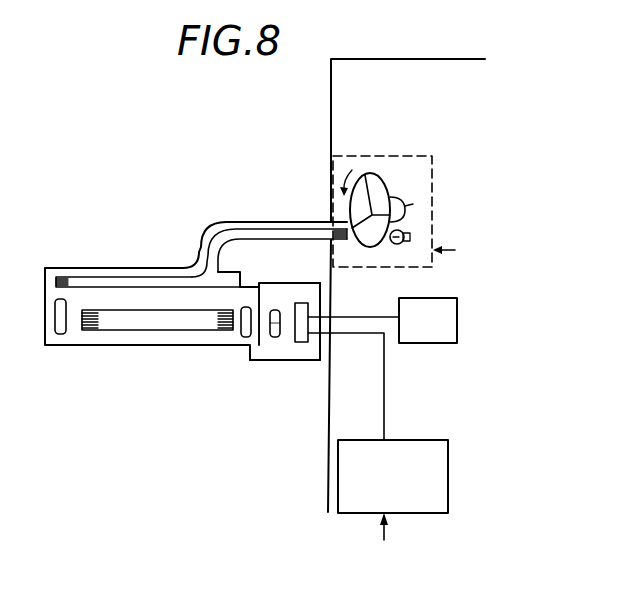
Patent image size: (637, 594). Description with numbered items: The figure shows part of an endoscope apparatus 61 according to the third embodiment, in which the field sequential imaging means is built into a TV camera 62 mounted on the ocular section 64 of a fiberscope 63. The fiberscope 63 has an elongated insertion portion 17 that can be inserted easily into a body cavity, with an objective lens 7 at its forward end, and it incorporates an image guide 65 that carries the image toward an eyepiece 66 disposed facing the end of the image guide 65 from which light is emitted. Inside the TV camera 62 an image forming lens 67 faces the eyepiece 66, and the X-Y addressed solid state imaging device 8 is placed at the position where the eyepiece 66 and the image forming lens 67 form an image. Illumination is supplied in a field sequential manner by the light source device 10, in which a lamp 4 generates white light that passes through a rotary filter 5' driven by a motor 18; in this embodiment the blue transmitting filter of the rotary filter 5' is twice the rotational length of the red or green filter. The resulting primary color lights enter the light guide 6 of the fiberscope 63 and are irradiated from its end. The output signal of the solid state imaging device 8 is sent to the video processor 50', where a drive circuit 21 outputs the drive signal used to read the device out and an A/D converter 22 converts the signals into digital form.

The video processor 50' is at (406, 263).
The light source device 10 is at (360, 156).
The rotary filter 5' is at (377, 182).
The motor 18 is at (402, 200).
The lamp 4 is at (391, 244).
The endoscope apparatus 61 is at (264, 138).
The light guide 6 is at (228, 221).
The fiberscope 63 is at (121, 257).
The insertion portion 17 is at (147, 268).
The objective lens 7 is at (59, 345).
The image guide 65 is at (122, 331).
The ocular section 64 is at (246, 306).
The TV camera 62 is at (247, 360).
The eyepiece 66 is at (277, 309).
The image forming lens 67 is at (276, 342).
The X-Y addressed solid state imaging device 8 is at (303, 345).
The A/D converter 22 is at (431, 345).
The drive circuit 21 is at (448, 495).